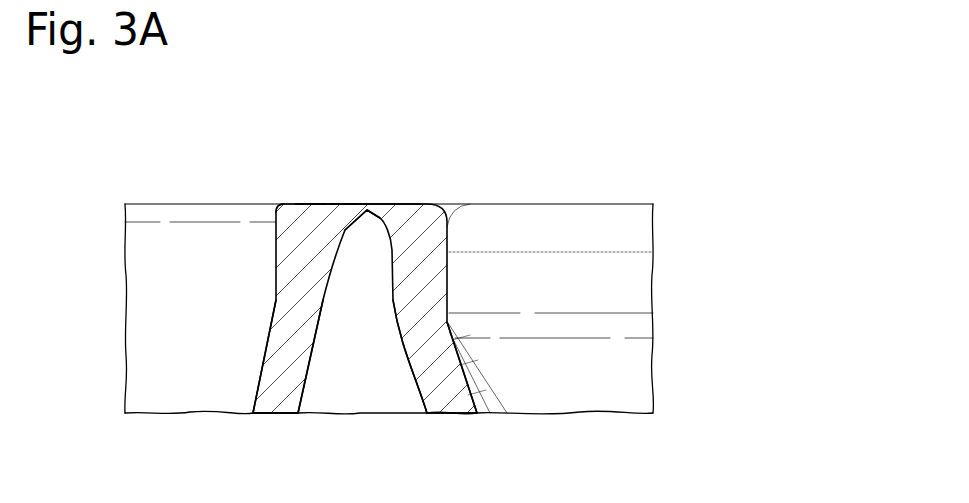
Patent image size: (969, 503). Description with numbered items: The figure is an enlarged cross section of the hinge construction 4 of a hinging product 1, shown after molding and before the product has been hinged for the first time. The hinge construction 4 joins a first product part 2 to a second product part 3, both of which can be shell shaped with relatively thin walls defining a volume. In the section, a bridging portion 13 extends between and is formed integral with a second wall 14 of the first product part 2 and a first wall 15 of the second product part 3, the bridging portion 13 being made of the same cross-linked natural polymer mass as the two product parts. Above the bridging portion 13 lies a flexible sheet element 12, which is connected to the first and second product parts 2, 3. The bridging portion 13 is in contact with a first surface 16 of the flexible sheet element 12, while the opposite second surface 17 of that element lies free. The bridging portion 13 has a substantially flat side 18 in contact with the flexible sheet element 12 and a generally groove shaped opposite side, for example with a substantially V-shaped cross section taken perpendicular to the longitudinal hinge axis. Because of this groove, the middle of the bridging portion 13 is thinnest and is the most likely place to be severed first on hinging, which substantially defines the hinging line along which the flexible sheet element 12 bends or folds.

The hinging product 1 is at (682, 278).
The first product part 2 is at (565, 178).
The second product part 3 is at (218, 185).
The hinge construction 4 is at (440, 170).
The flexible sheet element 12 is at (388, 204).
The bridge portion 13 is at (354, 216).
The second wall 14 is at (433, 372).
The first wall 15 is at (293, 330).
The first surface 16 is at (318, 210).
The second surface 17 is at (310, 204).
The flat side 18 is at (338, 204).